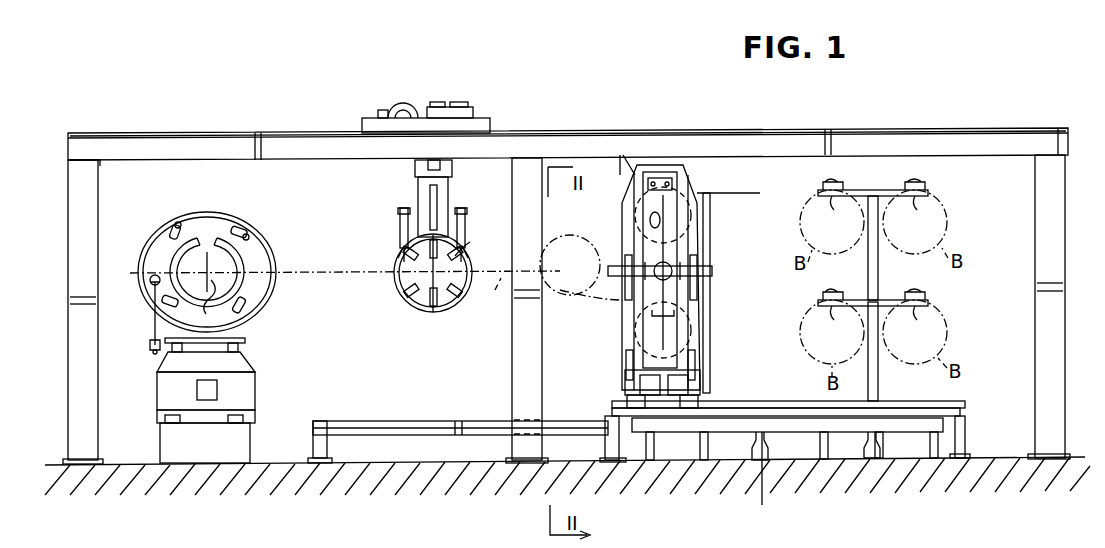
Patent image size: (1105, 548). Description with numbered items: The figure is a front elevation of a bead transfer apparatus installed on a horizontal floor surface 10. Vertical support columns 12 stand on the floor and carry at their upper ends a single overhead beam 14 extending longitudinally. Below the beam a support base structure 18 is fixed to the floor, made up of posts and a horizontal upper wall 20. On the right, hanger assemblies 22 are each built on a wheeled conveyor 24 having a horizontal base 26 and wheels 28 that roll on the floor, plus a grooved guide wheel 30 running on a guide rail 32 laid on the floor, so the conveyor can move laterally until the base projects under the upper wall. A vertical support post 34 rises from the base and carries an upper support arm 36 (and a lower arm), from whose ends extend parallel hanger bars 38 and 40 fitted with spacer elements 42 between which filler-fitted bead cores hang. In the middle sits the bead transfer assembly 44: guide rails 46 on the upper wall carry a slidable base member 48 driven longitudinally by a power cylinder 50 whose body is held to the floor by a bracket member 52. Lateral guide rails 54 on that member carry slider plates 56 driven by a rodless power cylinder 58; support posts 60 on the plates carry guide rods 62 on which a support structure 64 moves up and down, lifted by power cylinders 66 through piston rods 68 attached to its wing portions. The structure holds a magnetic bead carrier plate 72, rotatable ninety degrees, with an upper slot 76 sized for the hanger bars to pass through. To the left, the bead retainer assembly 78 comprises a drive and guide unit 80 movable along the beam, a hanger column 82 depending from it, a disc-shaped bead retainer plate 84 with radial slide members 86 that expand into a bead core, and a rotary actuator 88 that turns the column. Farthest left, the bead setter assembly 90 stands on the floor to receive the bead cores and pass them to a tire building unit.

The horizontal floor surface 10 is at (290, 462).
The vertical support columns 12 is at (99, 228).
The overhead beam 14 is at (250, 128).
The support base structure 18 is at (981, 444).
The horizontal upper wall 20 is at (965, 408).
The hanger assemblies 22 is at (766, 168).
The wheeled conveyor 24 is at (772, 478).
The horizontal base 26 is at (966, 425).
The wheels 28 is at (648, 462).
The guide wheel 30 is at (768, 450).
The guide rail 32 is at (705, 462).
The vertical support post 34 is at (879, 390).
The upper support arm 36 is at (871, 190).
The hanger bar 38 is at (832, 277).
The hanger bar 40 is at (915, 277).
The spacer elements 42 is at (826, 180).
The bead transfer assembly 44 is at (663, 150).
The guide rails 46 is at (780, 406).
The slidable base member 48 is at (604, 412).
The fluid-operated power cylinder 50 is at (432, 421).
The bracket member 52 is at (328, 446).
The guide rails 54 is at (624, 386).
The slider plates 56 is at (620, 380).
The fluid-operated power cylinder 58 is at (622, 362).
The support posts 60 is at (622, 340).
The guide rods 62 is at (628, 222).
The support structure 64 is at (570, 253).
The fluid-operated power cylinders 66 is at (649, 298).
The piston rods 68 is at (608, 276).
The bead carrier plate 72 is at (628, 172).
The upper slot 76 is at (685, 172).
The bead retainer assembly 78 is at (540, 108).
The drive and guide unit 80 is at (372, 108).
The hanger column 82 is at (449, 192).
The first bead retainer plate 84 is at (425, 308).
The radial slide members 86 is at (398, 285).
The fluid-actuated rotary actuator 88 is at (438, 102).
The bead setter assembly 90 is at (250, 222).